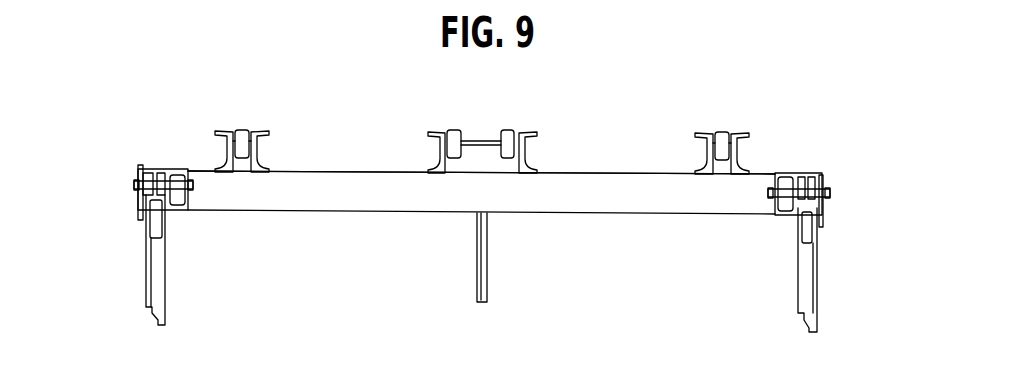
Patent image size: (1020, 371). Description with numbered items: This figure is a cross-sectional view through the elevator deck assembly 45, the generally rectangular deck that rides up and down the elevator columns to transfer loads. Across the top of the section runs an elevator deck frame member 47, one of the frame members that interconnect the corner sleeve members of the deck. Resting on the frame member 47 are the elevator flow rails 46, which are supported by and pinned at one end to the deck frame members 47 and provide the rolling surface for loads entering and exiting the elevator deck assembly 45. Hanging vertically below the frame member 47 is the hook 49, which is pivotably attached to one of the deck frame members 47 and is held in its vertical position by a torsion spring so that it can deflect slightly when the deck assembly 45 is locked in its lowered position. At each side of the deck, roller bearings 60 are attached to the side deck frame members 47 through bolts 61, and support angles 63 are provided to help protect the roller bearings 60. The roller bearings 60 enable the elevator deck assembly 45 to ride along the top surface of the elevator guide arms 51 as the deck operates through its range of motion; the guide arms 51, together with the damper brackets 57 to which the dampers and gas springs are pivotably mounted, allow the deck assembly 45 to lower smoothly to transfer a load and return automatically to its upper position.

The elevator deck assembly 45 is at (381, 149).
The elevator flow rails 46 is at (264, 140).
The elevator deck frame members 47 is at (368, 204).
The hook 49 is at (490, 284).
The elevator guide arms 51 is at (165, 290).
The damper brackets 57 is at (817, 293).
The roller bearings 60 is at (145, 200).
The bolts 61 is at (135, 185).
The support angles 63 is at (150, 168).